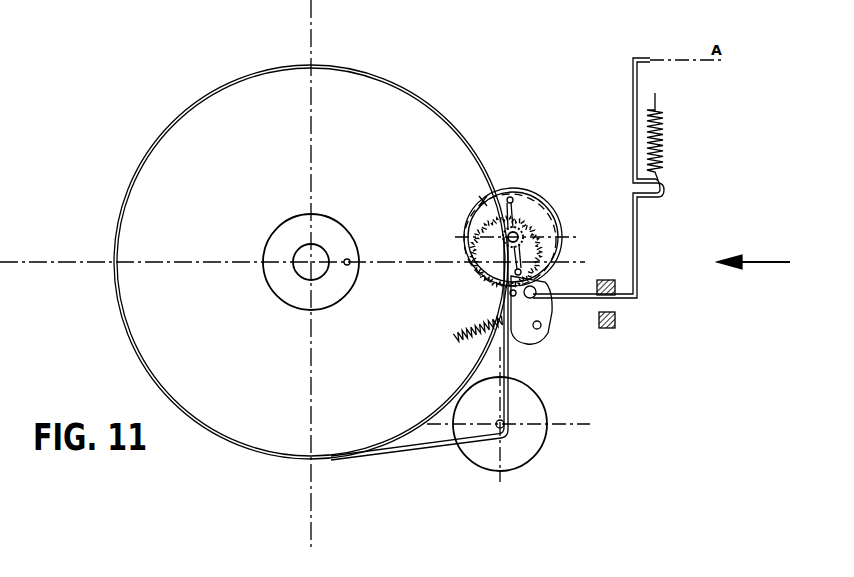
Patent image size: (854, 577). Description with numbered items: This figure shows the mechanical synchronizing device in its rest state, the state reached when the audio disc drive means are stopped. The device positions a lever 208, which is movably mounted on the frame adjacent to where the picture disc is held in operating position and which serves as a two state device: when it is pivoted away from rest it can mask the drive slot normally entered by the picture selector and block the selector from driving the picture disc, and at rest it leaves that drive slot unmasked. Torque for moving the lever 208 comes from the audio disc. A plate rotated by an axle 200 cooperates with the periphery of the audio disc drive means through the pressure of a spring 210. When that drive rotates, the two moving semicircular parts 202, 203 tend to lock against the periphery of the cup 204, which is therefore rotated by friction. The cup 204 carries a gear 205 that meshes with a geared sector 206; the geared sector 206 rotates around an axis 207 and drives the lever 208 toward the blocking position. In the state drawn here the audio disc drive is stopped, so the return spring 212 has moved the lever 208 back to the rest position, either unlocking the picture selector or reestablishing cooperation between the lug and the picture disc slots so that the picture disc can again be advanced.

The axle 200 is at (517, 223).
The moving semicircular part 202 is at (540, 219).
The moving semicircular part 203 is at (490, 170).
The cup 204 is at (543, 197).
The gear 205 is at (525, 232).
The geared sector 206 is at (478, 284).
The axis 207 is at (540, 335).
The lever 208 is at (638, 295).
The spring 210 is at (455, 340).
The return spring 212 is at (664, 146).